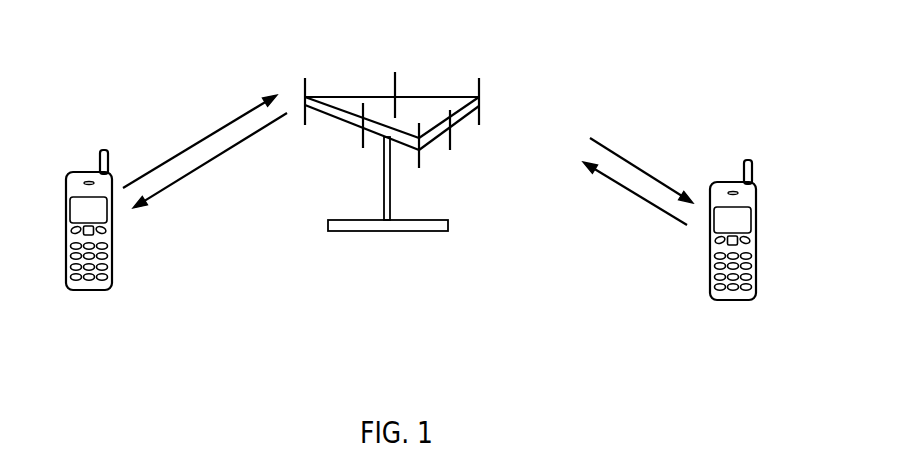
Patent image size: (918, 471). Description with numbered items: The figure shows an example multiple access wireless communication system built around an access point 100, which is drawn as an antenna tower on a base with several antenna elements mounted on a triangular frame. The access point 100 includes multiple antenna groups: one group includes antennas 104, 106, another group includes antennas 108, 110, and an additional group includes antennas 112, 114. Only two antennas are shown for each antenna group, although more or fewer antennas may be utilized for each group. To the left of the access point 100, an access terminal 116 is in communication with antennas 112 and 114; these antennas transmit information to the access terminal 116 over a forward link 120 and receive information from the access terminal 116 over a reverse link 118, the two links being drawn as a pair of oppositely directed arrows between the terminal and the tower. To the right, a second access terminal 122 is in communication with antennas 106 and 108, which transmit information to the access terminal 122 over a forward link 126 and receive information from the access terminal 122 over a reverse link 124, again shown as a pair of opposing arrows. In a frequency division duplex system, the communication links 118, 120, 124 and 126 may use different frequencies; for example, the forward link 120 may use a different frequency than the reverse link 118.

The access point 100 is at (395, 231).
The antenna 104 is at (420, 165).
The antenna 106 is at (452, 146).
The antenna 108 is at (481, 110).
The antenna 110 is at (396, 72).
The antenna 112 is at (302, 83).
The antenna 114 is at (361, 143).
The access terminal 116 is at (67, 208).
The reverse link 118 is at (210, 132).
The forward link 120 is at (193, 173).
The access terminal 122 is at (757, 227).
The reverse link 124 is at (648, 205).
The forward link 126 is at (638, 167).